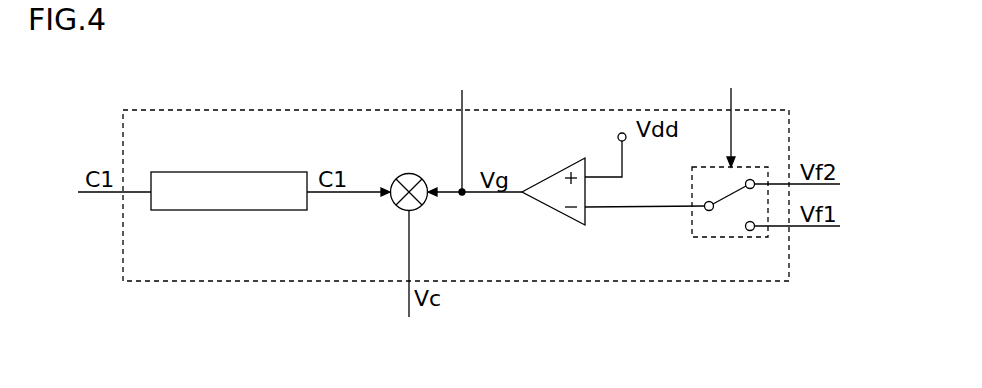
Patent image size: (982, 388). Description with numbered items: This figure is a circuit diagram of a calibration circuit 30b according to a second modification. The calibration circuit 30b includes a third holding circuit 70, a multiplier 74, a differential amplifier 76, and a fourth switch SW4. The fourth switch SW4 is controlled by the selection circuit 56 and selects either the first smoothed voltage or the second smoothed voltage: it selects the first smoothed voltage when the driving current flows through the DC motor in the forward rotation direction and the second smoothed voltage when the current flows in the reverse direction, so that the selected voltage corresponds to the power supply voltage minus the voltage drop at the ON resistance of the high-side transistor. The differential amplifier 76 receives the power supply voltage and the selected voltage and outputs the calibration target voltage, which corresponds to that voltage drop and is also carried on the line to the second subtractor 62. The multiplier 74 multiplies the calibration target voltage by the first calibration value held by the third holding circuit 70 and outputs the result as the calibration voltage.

The calibration circuit 30b is at (752, 283).
The third holding circuit 70 is at (272, 172).
The multiplier 74 is at (418, 176).
The second subtractor 62 is at (462, 131).
The differential amplifier 76 is at (553, 209).
The fourth switch SW4 is at (712, 238).
The selection circuit 56 is at (732, 116).